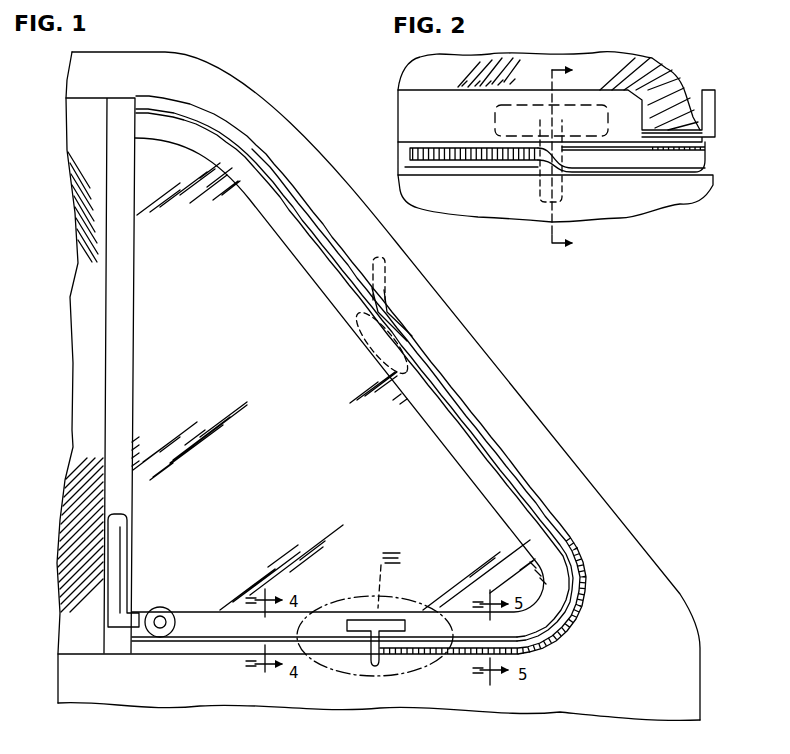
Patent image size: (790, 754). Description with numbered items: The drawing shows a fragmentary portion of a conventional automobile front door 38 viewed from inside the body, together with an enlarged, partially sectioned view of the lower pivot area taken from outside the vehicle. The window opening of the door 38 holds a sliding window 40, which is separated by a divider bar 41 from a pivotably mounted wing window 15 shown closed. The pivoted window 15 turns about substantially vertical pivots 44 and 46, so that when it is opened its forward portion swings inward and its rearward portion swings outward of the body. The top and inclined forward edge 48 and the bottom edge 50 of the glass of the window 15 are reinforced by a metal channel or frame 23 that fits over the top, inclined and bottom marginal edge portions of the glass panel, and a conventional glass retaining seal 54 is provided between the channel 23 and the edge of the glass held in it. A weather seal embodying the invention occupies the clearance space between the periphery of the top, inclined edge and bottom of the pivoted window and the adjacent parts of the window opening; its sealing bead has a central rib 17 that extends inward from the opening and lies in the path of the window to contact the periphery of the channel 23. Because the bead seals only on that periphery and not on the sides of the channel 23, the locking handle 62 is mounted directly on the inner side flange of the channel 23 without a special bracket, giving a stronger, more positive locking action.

In FIG. 1, the pivoted window 15 is at (313, 459).
In FIG. 2, the pivoted window 15 is at (588, 62).
In FIG. 1, the central rib 17 is at (318, 753).
In FIG. 1, the metal channel or frame 23 is at (210, 620).
In FIG. 1, the vehicle door 38 is at (636, 602).
In FIG. 1, the sliding window 40 is at (82, 354).
In FIG. 1, the divider bar 41 is at (120, 377).
In FIG. 1, the pivot 44 is at (380, 665).
In FIG. 2, the pivot 44 is at (562, 183).
In FIG. 1, the pivot 46 is at (386, 278).
In FIG. 1, the top and inclined forward edge 48 is at (490, 496).
In FIG. 1, the bottom edge 50 is at (520, 630).
In FIG. 2, the bottom edge 50 is at (708, 165).
In FIG. 2, the glass retaining seal 54 is at (714, 132).
In FIG. 1, the locking handle 62 is at (115, 557).